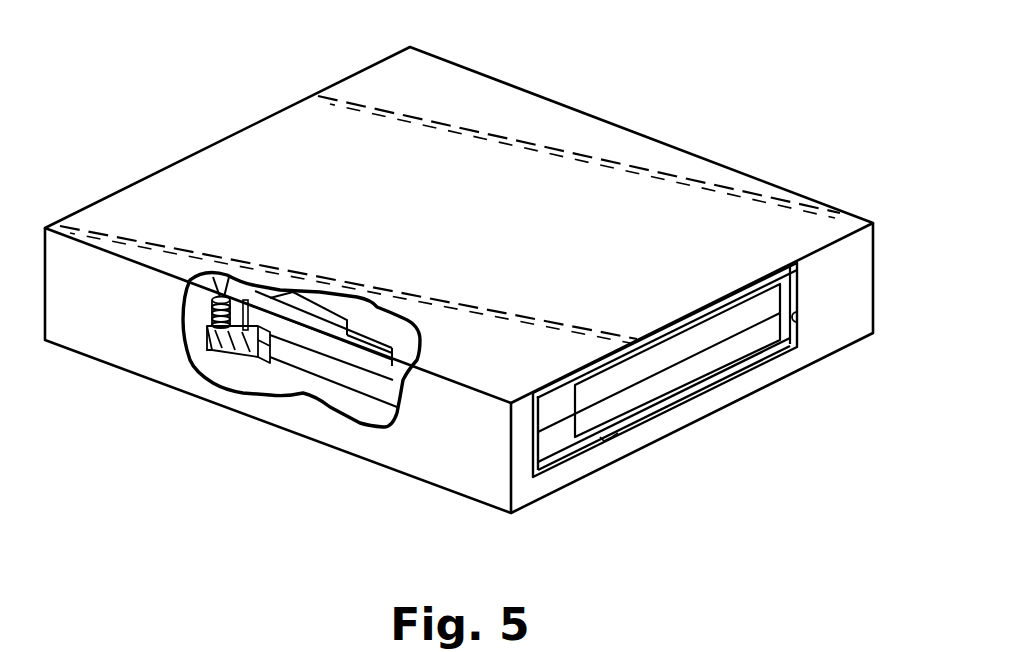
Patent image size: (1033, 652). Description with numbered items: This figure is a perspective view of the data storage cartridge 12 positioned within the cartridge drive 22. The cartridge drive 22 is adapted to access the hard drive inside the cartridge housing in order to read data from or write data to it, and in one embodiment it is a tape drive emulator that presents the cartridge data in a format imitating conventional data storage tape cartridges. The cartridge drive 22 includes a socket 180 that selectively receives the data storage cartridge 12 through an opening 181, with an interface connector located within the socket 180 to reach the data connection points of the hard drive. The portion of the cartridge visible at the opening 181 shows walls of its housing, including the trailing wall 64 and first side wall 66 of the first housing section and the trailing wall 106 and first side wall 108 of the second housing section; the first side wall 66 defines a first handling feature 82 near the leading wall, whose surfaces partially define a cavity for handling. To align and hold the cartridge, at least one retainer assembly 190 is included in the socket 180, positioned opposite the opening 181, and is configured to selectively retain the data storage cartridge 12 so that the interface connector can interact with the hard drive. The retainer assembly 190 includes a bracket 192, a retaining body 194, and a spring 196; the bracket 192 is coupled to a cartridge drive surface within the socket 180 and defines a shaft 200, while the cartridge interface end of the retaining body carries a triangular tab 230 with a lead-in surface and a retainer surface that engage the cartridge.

The cartridge drive 22 is at (632, 78).
The data storage cartridge 12 is at (726, 352).
The trailing wall 64 is at (683, 370).
The first side wall 66 is at (381, 395).
The first handling feature 82 is at (262, 355).
The trailing wall 106 is at (613, 377).
The first side wall 108 is at (404, 372).
The socket 180 is at (789, 347).
The opening 181 is at (797, 322).
The retainer assembly 190 is at (215, 362).
The bracket 192 is at (222, 349).
The retaining body 194 is at (237, 353).
The spring 196 is at (188, 296).
The shaft 200 is at (223, 296).
The triangular tab 230 is at (246, 353).